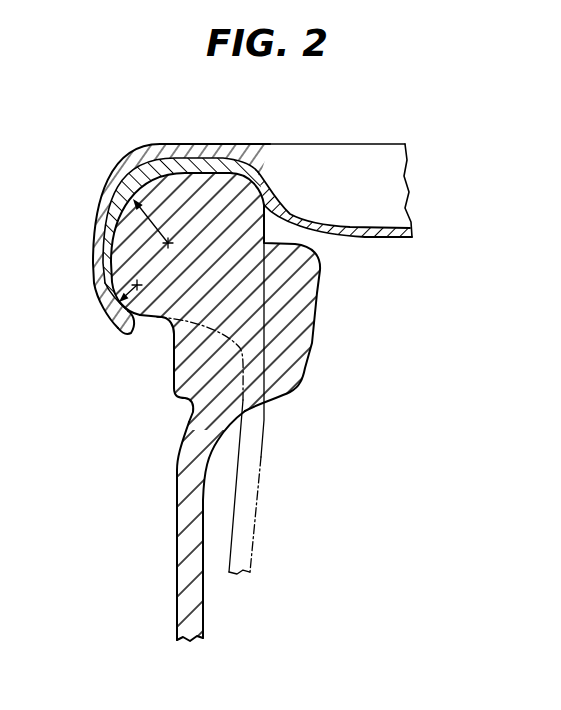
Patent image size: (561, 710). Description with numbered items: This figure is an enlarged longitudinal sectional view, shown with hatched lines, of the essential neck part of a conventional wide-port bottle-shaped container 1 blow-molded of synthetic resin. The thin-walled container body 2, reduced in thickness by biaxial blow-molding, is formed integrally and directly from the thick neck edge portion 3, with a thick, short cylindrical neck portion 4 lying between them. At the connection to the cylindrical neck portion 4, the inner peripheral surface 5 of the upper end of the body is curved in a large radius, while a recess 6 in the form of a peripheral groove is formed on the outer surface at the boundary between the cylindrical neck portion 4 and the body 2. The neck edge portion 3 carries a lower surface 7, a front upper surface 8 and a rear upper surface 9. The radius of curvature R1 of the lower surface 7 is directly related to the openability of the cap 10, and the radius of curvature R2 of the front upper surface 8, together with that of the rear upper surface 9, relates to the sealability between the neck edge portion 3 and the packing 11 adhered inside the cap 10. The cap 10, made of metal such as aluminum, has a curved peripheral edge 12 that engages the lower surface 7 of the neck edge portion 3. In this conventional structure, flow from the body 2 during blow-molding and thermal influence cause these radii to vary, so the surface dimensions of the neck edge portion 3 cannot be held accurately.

The bottle-shaped container 1 is at (168, 588).
The container body 2 is at (180, 517).
The neck edge portion 3 is at (123, 229).
The cylindrical neck portion 4 is at (295, 307).
The inner peripheral surface 5 is at (210, 457).
The recess 6 is at (192, 408).
The lower surface 7 is at (117, 292).
The front upper surface 8 is at (121, 174).
The rear upper surface 9 is at (237, 190).
The cap 10 is at (307, 212).
The packing 11 is at (175, 158).
The curved peripheral edge 12 is at (122, 328).
The radius of curvature of the lower surface R1 is at (154, 215).
The radius of curvature of the front upper surface R2 is at (128, 282).